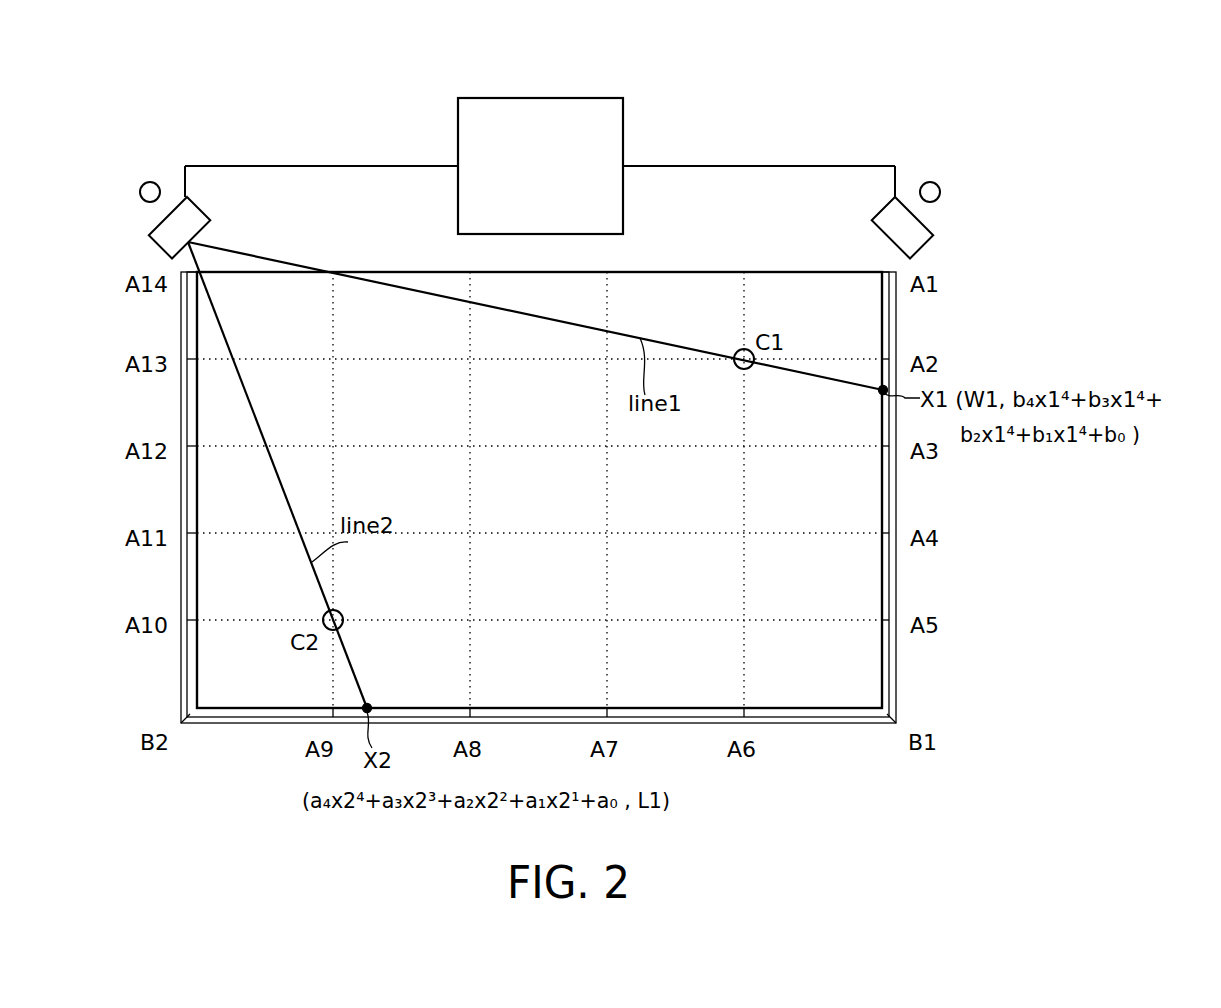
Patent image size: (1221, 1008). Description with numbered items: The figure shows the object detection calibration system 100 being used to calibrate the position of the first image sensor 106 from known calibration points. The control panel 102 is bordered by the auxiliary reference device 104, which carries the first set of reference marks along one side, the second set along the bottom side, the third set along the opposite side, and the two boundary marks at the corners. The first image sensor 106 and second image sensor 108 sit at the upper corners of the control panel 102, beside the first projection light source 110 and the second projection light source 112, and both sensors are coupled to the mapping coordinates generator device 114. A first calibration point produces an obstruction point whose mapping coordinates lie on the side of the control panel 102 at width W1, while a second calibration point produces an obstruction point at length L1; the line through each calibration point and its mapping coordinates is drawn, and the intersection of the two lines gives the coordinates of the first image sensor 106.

The object detection calibration system 100 is at (915, 88).
The control panel 102 is at (668, 272).
The auxiliary reference device 104 is at (896, 317).
The first image sensor 106 is at (148, 235).
The second image sensor 108 is at (934, 232).
The first projection light source 110 is at (143, 186).
The second projection light source 112 is at (937, 186).
The mapping coordinates generator device 114 is at (590, 98).